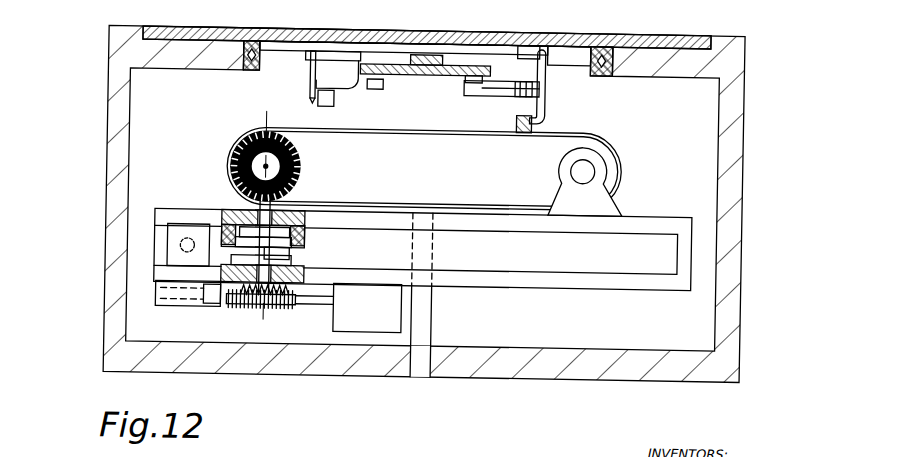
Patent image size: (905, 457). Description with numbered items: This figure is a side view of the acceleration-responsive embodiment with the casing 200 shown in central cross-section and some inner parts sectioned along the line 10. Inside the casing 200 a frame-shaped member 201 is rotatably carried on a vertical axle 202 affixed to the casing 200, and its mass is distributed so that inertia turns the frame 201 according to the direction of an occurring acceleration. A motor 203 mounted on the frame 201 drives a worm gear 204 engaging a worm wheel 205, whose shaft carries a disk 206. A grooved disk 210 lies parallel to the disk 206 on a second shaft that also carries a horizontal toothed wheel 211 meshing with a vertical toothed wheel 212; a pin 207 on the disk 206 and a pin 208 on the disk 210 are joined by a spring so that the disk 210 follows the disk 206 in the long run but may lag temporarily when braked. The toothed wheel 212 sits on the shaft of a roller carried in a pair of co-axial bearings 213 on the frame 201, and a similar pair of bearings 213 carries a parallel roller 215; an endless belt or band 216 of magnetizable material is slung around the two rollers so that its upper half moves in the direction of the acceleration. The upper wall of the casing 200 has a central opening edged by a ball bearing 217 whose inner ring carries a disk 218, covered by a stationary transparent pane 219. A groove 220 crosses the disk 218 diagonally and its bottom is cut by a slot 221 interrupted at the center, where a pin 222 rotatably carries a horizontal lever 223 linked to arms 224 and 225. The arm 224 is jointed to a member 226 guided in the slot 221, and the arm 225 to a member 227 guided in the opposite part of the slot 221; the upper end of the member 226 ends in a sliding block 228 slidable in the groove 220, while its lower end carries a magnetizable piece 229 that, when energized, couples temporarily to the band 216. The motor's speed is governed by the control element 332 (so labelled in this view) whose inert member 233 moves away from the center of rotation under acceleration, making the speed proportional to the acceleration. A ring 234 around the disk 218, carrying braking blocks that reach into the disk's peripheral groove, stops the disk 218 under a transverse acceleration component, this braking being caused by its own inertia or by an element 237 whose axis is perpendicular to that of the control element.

The section line 10- 10 is at (257, 218).
The casing 200 is at (109, 134).
The frame-shaped member 201 is at (539, 273).
The vertical axle 202 is at (423, 368).
The motor 203 is at (367, 307).
The worm gear 204 is at (282, 316).
The worm wheel 205 is at (235, 306).
The disk 206 is at (288, 264).
The pin 207 is at (291, 255).
The pin 208 is at (300, 230).
The grooved disk 210 is at (228, 211).
The horizontal toothed wheel 211 is at (293, 189).
The vertical toothed wheel 212 is at (296, 155).
The co-axial bearings 213 is at (600, 204).
The roller 215 is at (619, 174).
The endless belt or band 216 is at (421, 133).
The ball bearing 217 is at (606, 74).
The disk 218 is at (557, 58).
The transparent pane 219 is at (139, 36).
The groove 220 is at (279, 57).
The slot 221 is at (252, 63).
The pin 222 is at (420, 67).
The horizontal lever 223 is at (446, 80).
The arm 224 is at (495, 89).
The arm 225 is at (343, 91).
The member 226 is at (533, 110).
The member 227 is at (310, 101).
The sliding block 228 is at (515, 46).
The magnetizable piece 229 is at (518, 131).
The inert member 233 is at (213, 301).
The ring 234 is at (220, 233).
The element 237 is at (167, 251).
The magnet 332 is at (158, 313).